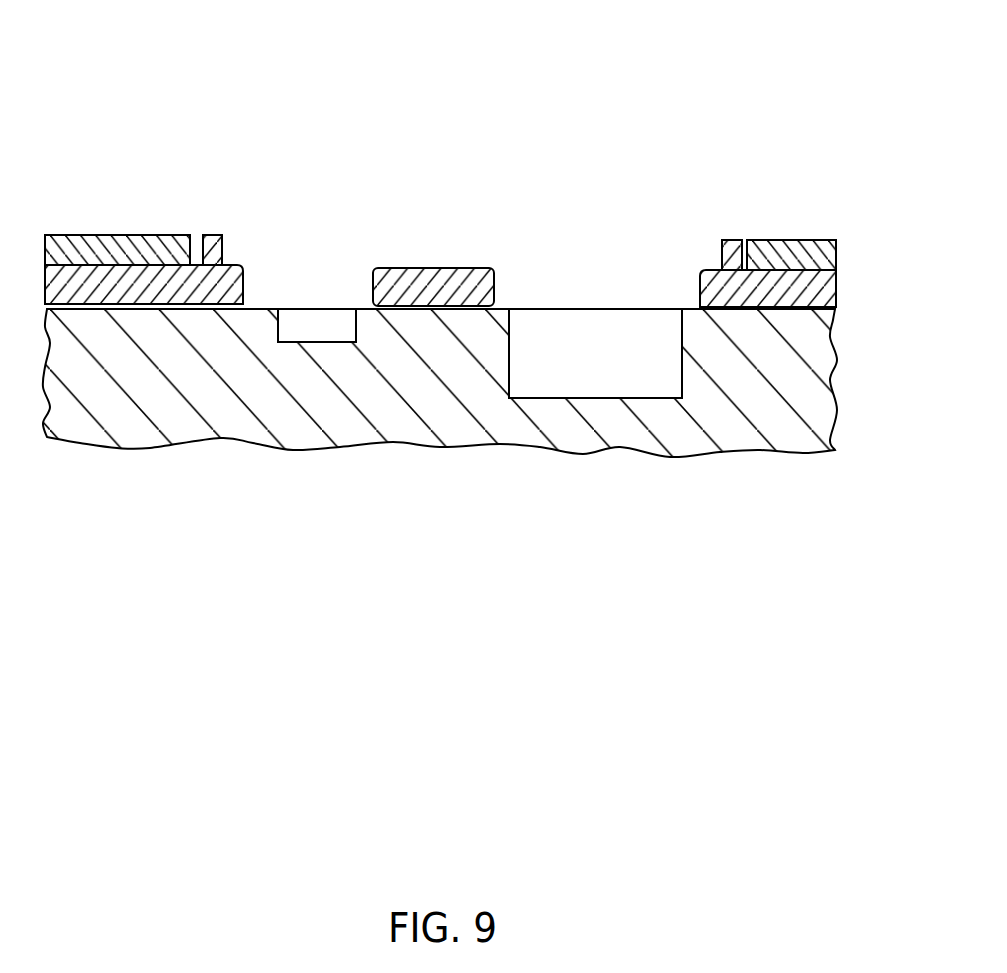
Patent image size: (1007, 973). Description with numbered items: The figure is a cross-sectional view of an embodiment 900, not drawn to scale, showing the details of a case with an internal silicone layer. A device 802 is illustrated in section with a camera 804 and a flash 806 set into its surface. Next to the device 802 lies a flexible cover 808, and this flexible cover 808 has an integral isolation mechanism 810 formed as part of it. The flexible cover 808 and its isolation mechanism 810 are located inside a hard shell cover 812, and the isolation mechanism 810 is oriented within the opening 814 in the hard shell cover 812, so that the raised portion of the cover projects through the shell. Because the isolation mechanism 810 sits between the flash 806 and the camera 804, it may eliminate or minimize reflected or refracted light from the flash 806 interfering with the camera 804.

The device 802 is at (383, 413).
The camera 804 is at (553, 353).
The flash 806 is at (318, 325).
The flexible cover 808 is at (825, 292).
The isolation mechanism 810 is at (706, 268).
The hard shell cover 812 is at (804, 240).
The opening 814 is at (747, 240).
The embodiment 900 is at (334, 632).